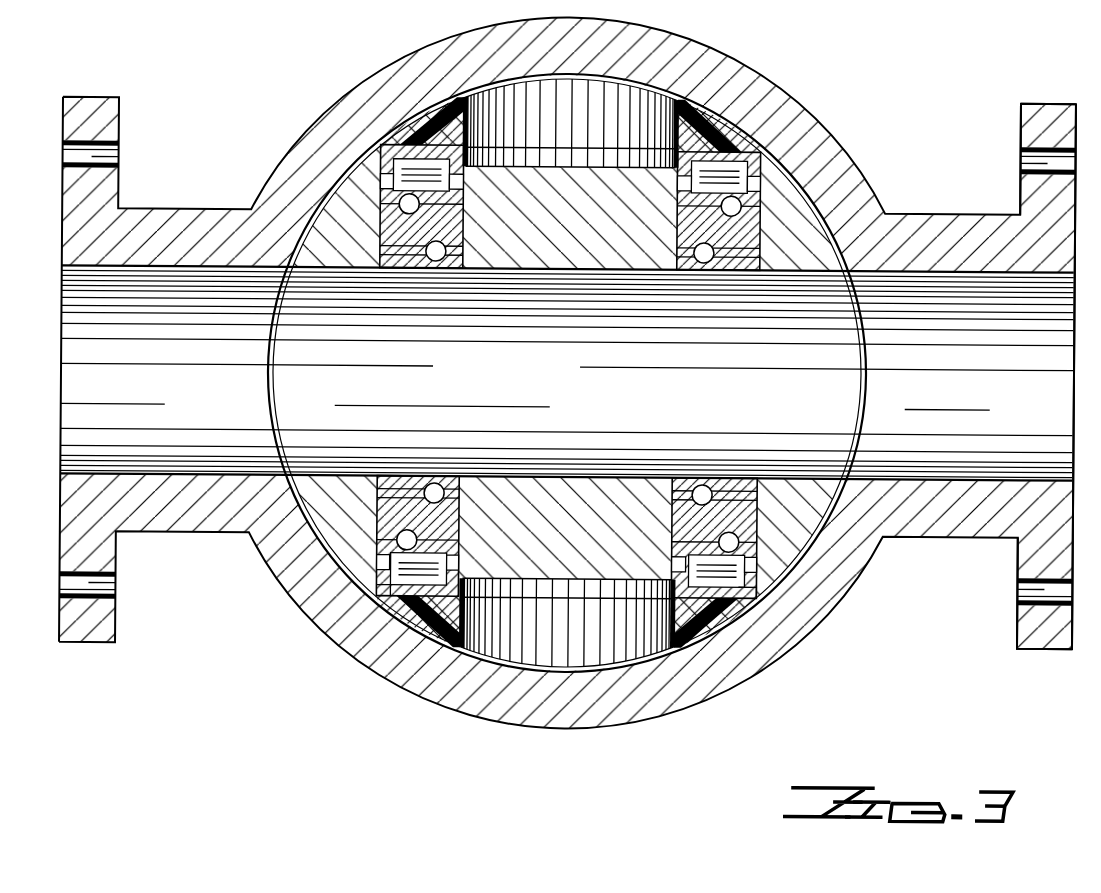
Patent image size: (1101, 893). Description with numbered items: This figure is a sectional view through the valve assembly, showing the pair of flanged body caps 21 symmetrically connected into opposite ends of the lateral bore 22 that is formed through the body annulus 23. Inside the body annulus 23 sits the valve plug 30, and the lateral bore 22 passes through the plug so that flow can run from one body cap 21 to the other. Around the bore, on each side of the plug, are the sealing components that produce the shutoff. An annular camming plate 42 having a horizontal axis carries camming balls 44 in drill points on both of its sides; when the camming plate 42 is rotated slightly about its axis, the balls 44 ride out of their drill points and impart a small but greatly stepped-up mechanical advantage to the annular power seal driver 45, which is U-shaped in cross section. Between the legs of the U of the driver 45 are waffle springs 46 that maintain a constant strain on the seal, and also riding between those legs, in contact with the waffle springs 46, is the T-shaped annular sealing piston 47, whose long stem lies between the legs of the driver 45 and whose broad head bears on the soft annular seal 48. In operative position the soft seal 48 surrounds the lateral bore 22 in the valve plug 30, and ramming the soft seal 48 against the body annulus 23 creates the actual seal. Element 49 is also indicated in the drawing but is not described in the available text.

The flanged body cap 21 is at (1019, 193).
The lateral bore 22 is at (963, 400).
The body annulus 23 is at (410, 690).
The valve plug 30 is at (548, 540).
The annular camming plate 42 is at (463, 237).
The camming ball 44 is at (692, 489).
The annular power seal driver 45 is at (673, 561).
The waffle spring 46 is at (432, 567).
The T-shaped annular sealing piston 47 is at (386, 564).
The soft annular seal 48 is at (686, 137).
The retaining ring 49 is at (752, 595).